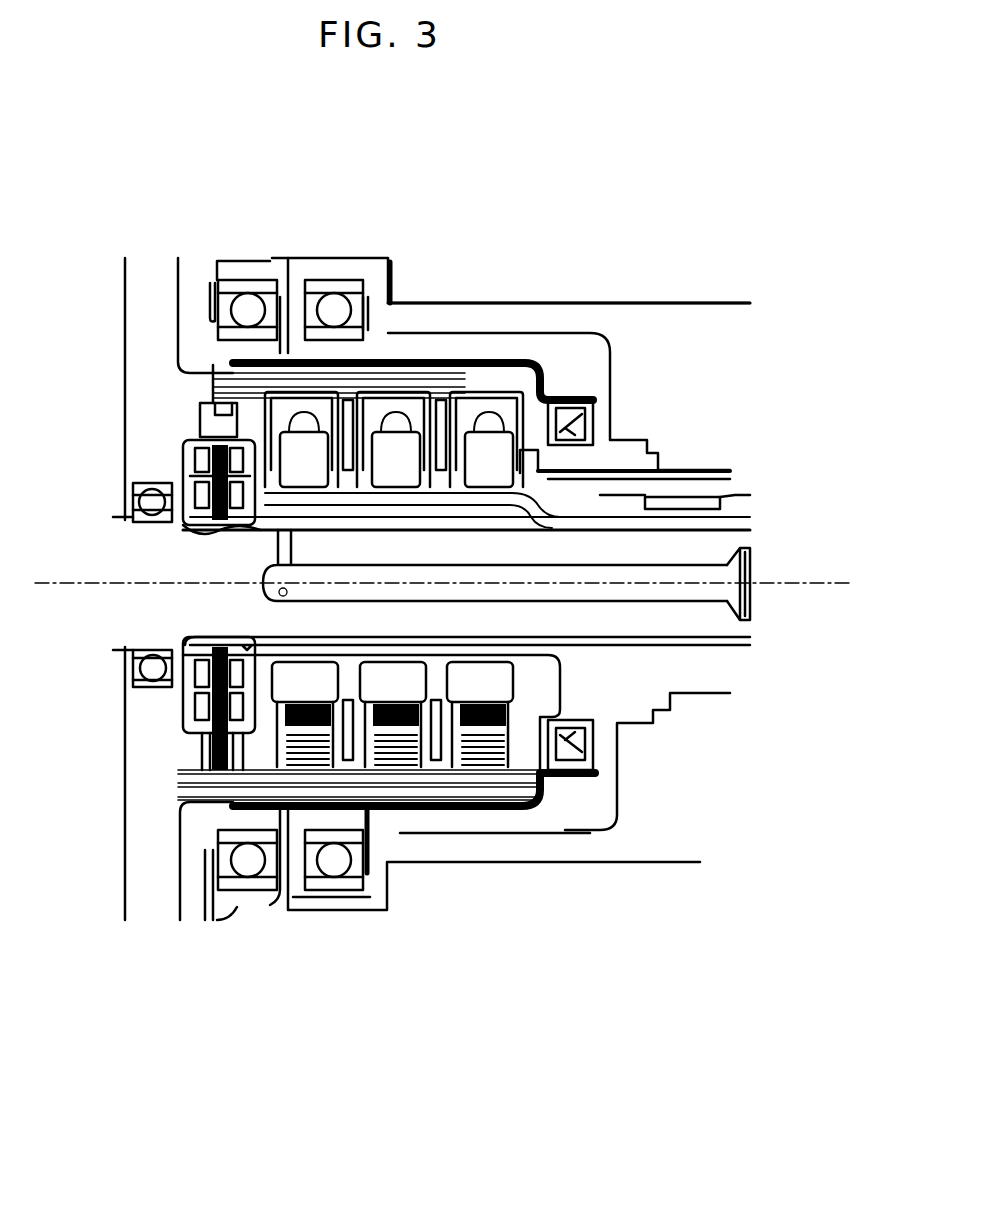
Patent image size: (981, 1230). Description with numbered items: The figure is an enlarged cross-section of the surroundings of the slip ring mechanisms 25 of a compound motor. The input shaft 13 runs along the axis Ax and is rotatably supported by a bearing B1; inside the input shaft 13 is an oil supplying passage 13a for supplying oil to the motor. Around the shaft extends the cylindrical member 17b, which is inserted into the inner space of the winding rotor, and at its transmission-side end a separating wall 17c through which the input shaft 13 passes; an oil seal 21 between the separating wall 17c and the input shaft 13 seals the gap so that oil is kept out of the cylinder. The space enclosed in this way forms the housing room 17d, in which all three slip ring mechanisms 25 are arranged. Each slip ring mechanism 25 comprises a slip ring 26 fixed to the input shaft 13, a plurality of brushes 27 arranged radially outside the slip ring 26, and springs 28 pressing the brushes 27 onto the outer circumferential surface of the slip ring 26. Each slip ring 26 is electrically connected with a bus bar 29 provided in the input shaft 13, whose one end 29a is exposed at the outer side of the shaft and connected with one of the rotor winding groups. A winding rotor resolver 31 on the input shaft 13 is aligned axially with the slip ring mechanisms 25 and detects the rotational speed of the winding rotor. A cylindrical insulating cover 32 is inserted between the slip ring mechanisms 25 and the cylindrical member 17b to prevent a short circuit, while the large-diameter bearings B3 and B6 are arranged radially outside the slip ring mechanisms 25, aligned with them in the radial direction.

The input shaft 13 is at (152, 625).
The oil supplying passage 13a is at (700, 593).
The cylindrical member 17b is at (453, 357).
The separating wall 17c is at (552, 413).
The housing room 17d is at (522, 782).
The oil seal 21 is at (593, 413).
The slip ring mechanism 25 is at (342, 752).
The slip ring 26 is at (310, 480).
The brush 27 is at (287, 440).
The spring 28 is at (330, 413).
The bus bar 29 is at (600, 473).
The one end of the bus bar 29a is at (722, 475).
The winding rotor resolver 31 is at (205, 745).
The insulating cover 32 is at (247, 323).
The axis Ax is at (805, 582).
The bearing B1 is at (128, 683).
The bearing B3 is at (237, 880).
The winding rotor supporting bearing B6 is at (343, 890).